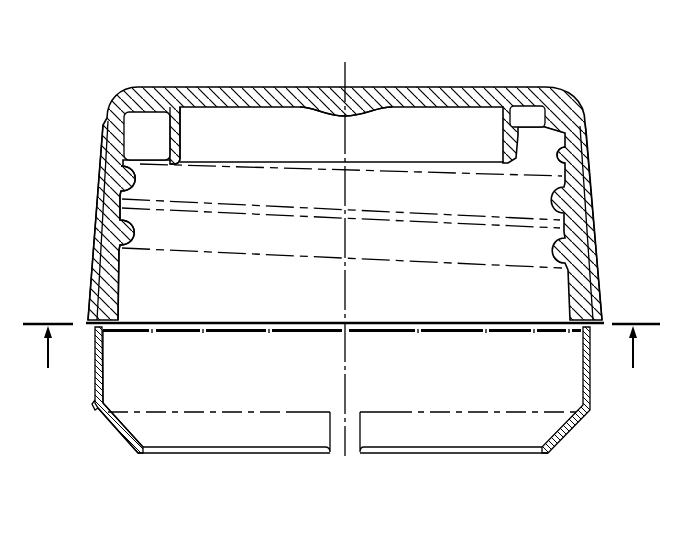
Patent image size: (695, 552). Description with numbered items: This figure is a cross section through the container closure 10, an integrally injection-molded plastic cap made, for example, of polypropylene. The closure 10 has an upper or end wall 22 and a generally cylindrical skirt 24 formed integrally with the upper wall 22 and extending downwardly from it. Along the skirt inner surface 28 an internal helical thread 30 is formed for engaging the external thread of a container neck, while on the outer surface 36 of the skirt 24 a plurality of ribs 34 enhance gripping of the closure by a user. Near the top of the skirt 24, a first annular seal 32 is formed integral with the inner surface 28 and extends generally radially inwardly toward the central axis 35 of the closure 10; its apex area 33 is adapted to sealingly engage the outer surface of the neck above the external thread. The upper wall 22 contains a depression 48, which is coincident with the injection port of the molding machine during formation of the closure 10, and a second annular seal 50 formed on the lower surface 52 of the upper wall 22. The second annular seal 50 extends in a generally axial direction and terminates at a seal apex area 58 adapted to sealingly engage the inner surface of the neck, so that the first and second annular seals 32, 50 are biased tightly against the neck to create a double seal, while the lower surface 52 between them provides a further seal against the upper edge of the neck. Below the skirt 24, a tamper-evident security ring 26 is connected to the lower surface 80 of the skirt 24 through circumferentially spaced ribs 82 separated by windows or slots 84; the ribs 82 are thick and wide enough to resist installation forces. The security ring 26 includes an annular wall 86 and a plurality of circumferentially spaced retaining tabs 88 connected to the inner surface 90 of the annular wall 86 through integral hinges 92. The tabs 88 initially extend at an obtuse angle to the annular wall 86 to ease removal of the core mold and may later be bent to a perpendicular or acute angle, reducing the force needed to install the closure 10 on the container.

The closure 10 is at (536, 49).
The upper wall 22 is at (426, 88).
The skirt 24 is at (110, 229).
The tamper-evident security ring 26 is at (97, 403).
The inner surface 28 is at (560, 152).
The internal helical thread 30 is at (458, 202).
The first annular seal 32 is at (527, 114).
The apex area 33 is at (547, 128).
The ribs 34 is at (105, 175).
The central axis 35 is at (341, 139).
The outer surface 36 is at (95, 316).
The depression 48 is at (353, 98).
The second annular seal 50 is at (182, 139).
The lower surface 52 is at (405, 110).
The seal apex area 58 is at (167, 144).
The lower surface 80 is at (588, 324).
The ribs 82 is at (201, 331).
The windows or slots 84 is at (130, 318).
The annular wall 86 is at (104, 376).
The retaining tabs 88 is at (163, 440).
The inner surface 90 is at (258, 394).
The integral hinges 92 is at (109, 417).